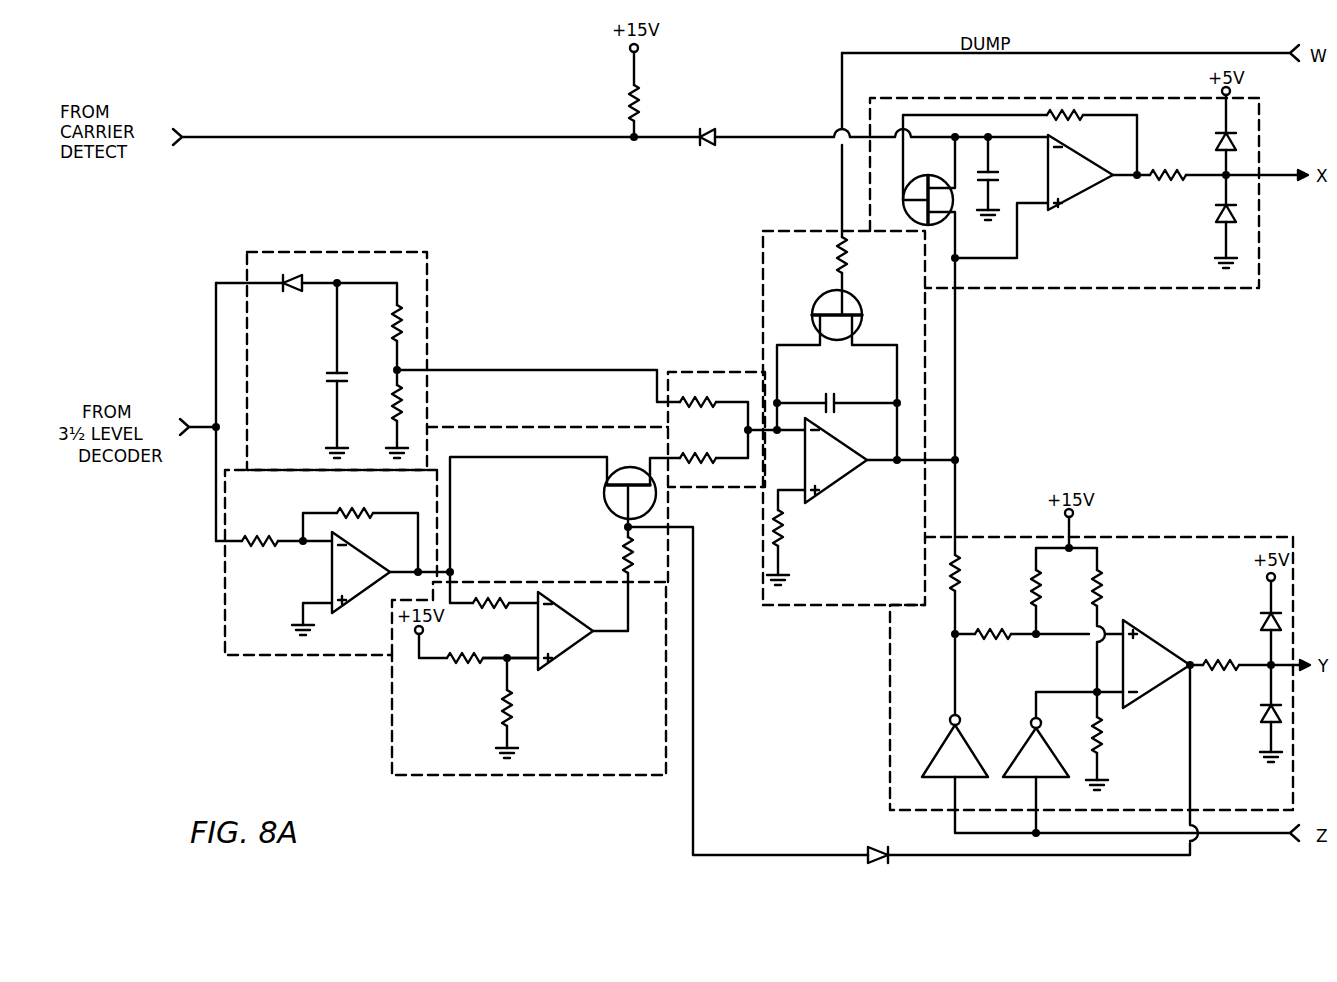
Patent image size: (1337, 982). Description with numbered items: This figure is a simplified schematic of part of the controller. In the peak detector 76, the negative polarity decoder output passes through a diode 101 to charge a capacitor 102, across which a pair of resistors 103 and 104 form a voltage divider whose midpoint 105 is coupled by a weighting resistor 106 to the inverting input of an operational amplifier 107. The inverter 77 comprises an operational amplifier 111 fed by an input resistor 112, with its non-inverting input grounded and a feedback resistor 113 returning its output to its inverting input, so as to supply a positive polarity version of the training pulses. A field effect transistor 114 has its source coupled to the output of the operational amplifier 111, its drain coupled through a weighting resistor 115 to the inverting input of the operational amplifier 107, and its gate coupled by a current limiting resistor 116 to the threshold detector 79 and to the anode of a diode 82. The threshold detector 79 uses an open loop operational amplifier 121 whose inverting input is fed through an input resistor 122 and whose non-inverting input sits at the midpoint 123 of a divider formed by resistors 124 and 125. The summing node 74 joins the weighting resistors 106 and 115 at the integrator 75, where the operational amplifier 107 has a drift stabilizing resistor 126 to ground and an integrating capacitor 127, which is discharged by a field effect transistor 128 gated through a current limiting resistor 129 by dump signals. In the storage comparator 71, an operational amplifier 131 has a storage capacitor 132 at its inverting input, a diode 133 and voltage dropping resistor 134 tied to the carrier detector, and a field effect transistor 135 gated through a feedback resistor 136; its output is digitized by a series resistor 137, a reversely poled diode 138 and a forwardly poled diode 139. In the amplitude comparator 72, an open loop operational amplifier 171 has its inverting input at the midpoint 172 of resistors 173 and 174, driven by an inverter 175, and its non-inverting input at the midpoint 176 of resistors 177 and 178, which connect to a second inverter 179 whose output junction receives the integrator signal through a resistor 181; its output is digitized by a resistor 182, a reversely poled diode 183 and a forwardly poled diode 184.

The storage comparator 71 is at (1135, 297).
The amplitude comparator 72 is at (1217, 535).
The summing node 74 is at (712, 372).
The integrator 75 is at (755, 292).
The peak detector 76 is at (382, 205).
The inverter 77 is at (312, 664).
The threshold detector 79 is at (580, 780).
The diode 82 is at (866, 850).
The diode 101 is at (289, 292).
The capacitor 102 is at (326, 378).
The resistor 103 is at (392, 330).
The resistor 104 is at (392, 400).
The midpoint 105 is at (393, 370).
The weighting resistor 106 is at (690, 400).
The operational amplifier 107 is at (858, 488).
The operational amplifier 111 is at (330, 574).
The input resistor 112 is at (267, 530).
The feedback resistor 113 is at (348, 505).
The field effect transistor 114 is at (604, 492).
The weighting resistor 115 is at (687, 456).
The current limiting resistor 116 is at (618, 549).
The operational amplifier 121 is at (590, 640).
The input resistor 122 is at (489, 585).
The midpoint 123 is at (506, 650).
The resistor 124 is at (464, 650).
The resistor 125 is at (510, 715).
The drift stabilizing resistor 126 is at (780, 545).
The integrating capacitor 127 is at (832, 398).
The field effect transistor 128 is at (855, 305).
The current limiting resistor 129 is at (850, 258).
The operational amplifier 131 is at (1105, 195).
The storage capacitor 132 is at (998, 178).
The diode 133 is at (709, 125).
The voltage dropping resistor 134 is at (628, 112).
The field effect transistor 135 is at (910, 170).
The feedback resistor 136 is at (1078, 122).
The series resistor 137 is at (1162, 168).
The diode 138 is at (1216, 218).
The diode 139 is at (1216, 143).
The operational amplifier 171 is at (1150, 700).
The midpoint 172 is at (1095, 690).
The resistor 173 is at (1100, 590).
The resistor 174 is at (1100, 750).
The inverter 175 is at (1020, 750).
The midpoint 176 is at (1040, 642).
The resistor 177 is at (1055, 592).
The resistor 178 is at (1010, 648).
The inverter 179 is at (940, 750).
The resistor 181 is at (962, 572).
The resistor 182 is at (1222, 675).
The diode 183 is at (1258, 720).
The diode 184 is at (1260, 625).